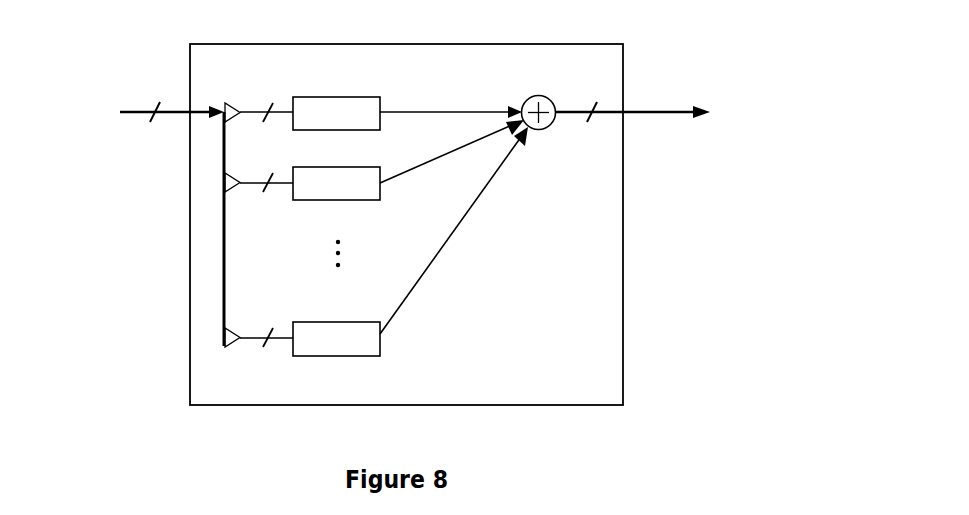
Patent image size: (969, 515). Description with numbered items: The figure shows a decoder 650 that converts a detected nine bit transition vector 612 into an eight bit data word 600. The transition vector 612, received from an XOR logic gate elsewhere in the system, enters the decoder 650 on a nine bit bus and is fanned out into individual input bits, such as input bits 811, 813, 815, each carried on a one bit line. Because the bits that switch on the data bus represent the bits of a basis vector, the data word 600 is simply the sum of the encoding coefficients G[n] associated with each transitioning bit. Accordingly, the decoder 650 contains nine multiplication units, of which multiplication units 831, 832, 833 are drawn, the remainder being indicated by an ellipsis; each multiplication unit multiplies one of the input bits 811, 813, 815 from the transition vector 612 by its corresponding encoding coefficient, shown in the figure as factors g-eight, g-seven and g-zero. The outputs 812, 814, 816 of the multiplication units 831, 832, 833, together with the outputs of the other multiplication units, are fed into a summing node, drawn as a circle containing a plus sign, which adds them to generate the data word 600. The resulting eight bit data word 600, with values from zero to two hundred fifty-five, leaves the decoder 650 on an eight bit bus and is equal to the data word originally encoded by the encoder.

The decoder 650 is at (406, 224).
The detected transition vector 612 is at (170, 116).
The input bit 811 is at (286, 114).
The input bit 813 is at (286, 185).
The input bit 815 is at (286, 340).
The multiplication unit 831 is at (362, 130).
The multiplication unit 832 is at (362, 200).
The multiplication unit 833 is at (362, 356).
The multiplication unit output 812 is at (403, 111).
The multiplication unit output 814 is at (447, 153).
The multiplication unit output 816 is at (458, 230).
The data word 600 is at (615, 116).